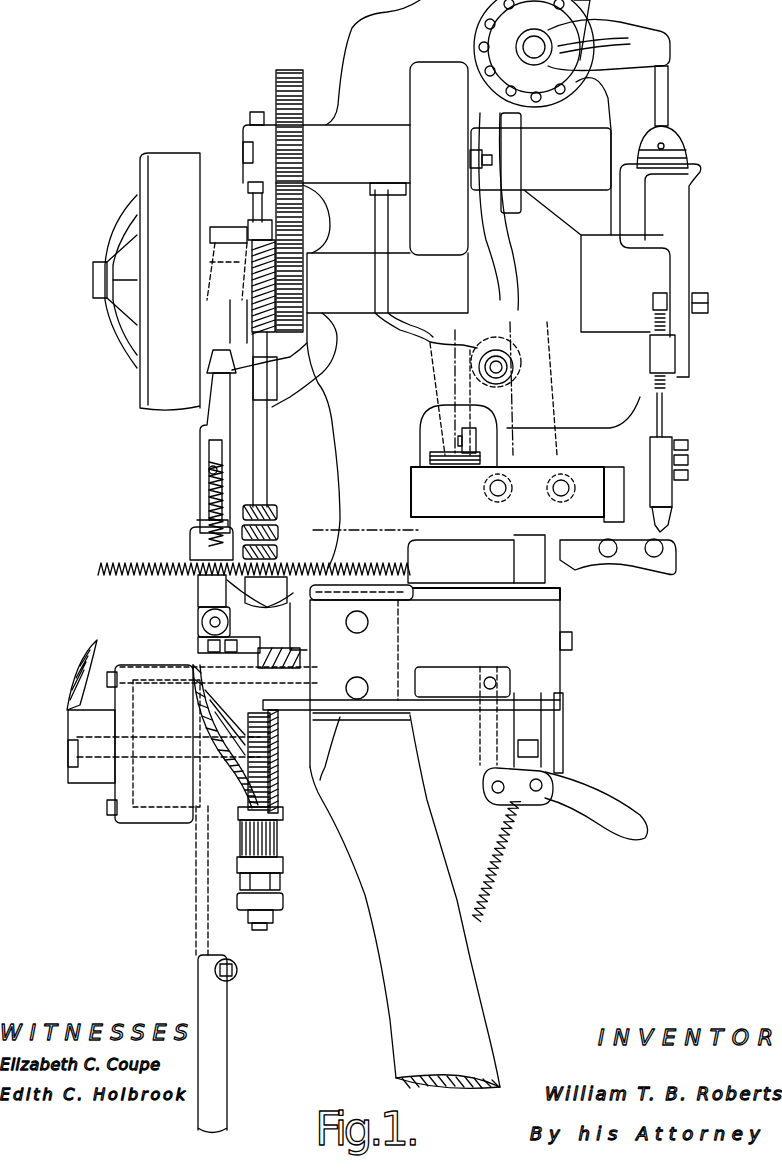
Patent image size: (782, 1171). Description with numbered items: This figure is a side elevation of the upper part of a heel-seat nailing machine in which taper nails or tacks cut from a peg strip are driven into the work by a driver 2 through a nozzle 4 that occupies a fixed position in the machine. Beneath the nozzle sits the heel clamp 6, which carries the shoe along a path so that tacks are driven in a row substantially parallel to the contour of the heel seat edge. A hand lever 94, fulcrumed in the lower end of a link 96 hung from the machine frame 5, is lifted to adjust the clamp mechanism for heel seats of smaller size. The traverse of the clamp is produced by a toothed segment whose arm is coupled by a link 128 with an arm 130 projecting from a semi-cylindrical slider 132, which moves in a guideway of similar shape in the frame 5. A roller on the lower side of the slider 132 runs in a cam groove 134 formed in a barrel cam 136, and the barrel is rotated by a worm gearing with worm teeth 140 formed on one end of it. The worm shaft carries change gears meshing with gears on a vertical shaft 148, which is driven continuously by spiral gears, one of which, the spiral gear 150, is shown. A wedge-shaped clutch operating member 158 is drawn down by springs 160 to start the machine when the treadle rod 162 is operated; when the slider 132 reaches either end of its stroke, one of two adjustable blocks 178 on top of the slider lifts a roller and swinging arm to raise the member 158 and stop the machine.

The driver 2 is at (668, 408).
The nozzle 4 is at (604, 508).
The machine frame 5 is at (419, 550).
The heel clamp 6 is at (621, 553).
The hand lever 94 is at (584, 800).
The link 96 is at (558, 747).
The link 128 is at (441, 707).
The arm 130 is at (200, 658).
The semi-cylindrical slider 132 is at (187, 683).
The cam groove 134 is at (278, 770).
The barrel cam 136 is at (243, 767).
The worm teeth 140 is at (283, 807).
The vertical shaft 148 is at (258, 453).
The spiral gear 150 is at (248, 238).
The clutch operating member 158 is at (223, 260).
The springs 160 is at (210, 480).
The treadle rod 162 is at (213, 928).
The blocks 178 is at (283, 547).